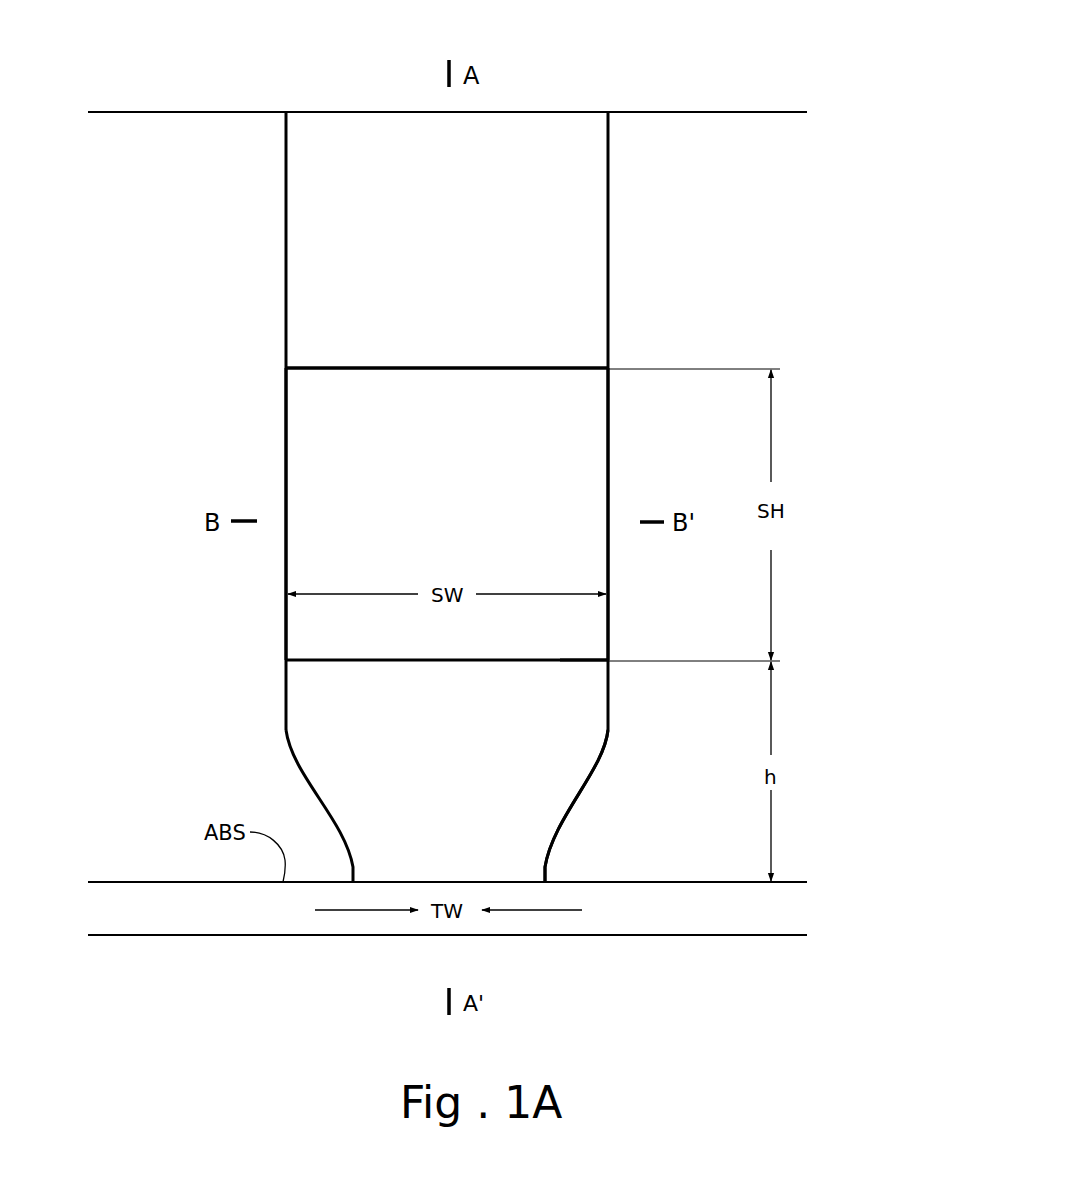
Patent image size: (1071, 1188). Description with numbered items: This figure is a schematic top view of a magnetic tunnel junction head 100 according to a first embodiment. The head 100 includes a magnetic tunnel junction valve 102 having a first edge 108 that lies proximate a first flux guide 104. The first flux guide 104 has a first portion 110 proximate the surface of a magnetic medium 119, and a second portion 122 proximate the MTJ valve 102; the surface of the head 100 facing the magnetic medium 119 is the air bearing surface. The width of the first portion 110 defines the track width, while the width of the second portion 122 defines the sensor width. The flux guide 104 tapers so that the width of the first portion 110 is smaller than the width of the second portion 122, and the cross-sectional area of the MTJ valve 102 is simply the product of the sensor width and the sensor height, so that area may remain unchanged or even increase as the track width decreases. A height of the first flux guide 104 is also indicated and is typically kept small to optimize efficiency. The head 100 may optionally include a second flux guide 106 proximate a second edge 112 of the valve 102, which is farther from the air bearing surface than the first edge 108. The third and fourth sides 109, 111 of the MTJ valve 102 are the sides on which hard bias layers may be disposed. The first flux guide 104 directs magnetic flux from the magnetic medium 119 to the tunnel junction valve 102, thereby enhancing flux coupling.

The magnetic tunnel junction head 100 is at (706, 64).
The magnetic tunnel junction valve 102 is at (583, 412).
The first flux guide 104 is at (583, 723).
The second flux guide 106 is at (583, 159).
The first edge 108 is at (342, 660).
The third side 109 is at (610, 565).
The first portion 110 is at (522, 882).
The fourth side 111 is at (286, 457).
The second edge 112 is at (333, 371).
The magnetic medium 119 is at (172, 935).
The second portion 122 is at (580, 665).